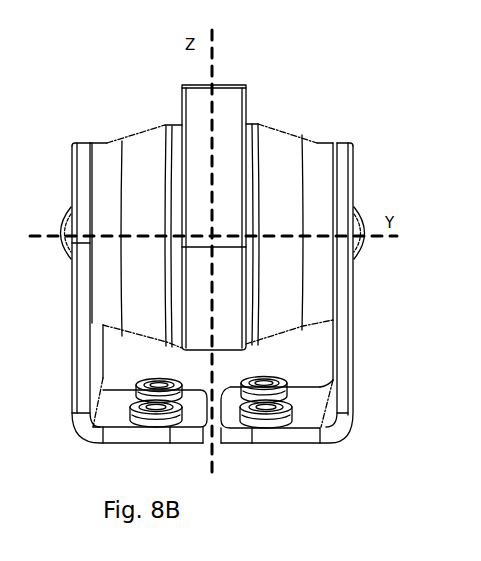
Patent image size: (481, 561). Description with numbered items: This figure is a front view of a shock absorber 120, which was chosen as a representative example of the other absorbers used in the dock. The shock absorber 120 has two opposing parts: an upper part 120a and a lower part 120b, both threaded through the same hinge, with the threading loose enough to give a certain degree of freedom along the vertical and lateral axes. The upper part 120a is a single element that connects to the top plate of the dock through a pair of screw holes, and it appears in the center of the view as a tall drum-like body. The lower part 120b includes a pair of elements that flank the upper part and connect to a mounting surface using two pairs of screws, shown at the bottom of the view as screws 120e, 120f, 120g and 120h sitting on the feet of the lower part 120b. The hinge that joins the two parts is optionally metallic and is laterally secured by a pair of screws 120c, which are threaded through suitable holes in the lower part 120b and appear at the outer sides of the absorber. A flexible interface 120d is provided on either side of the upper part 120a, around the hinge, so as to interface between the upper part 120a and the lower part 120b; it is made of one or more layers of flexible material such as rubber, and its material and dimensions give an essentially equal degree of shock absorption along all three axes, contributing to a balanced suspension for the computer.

The shock absorber 120 is at (280, 48).
The upper part 120a is at (238, 97).
The lower part 120b is at (80, 358).
The screws 120c is at (62, 208).
The flexible interface 120d is at (138, 137).
The screw 120e is at (146, 418).
The screw 120f is at (143, 381).
The screw 120g is at (280, 418).
The upper right bearing wheel 120h is at (273, 381).